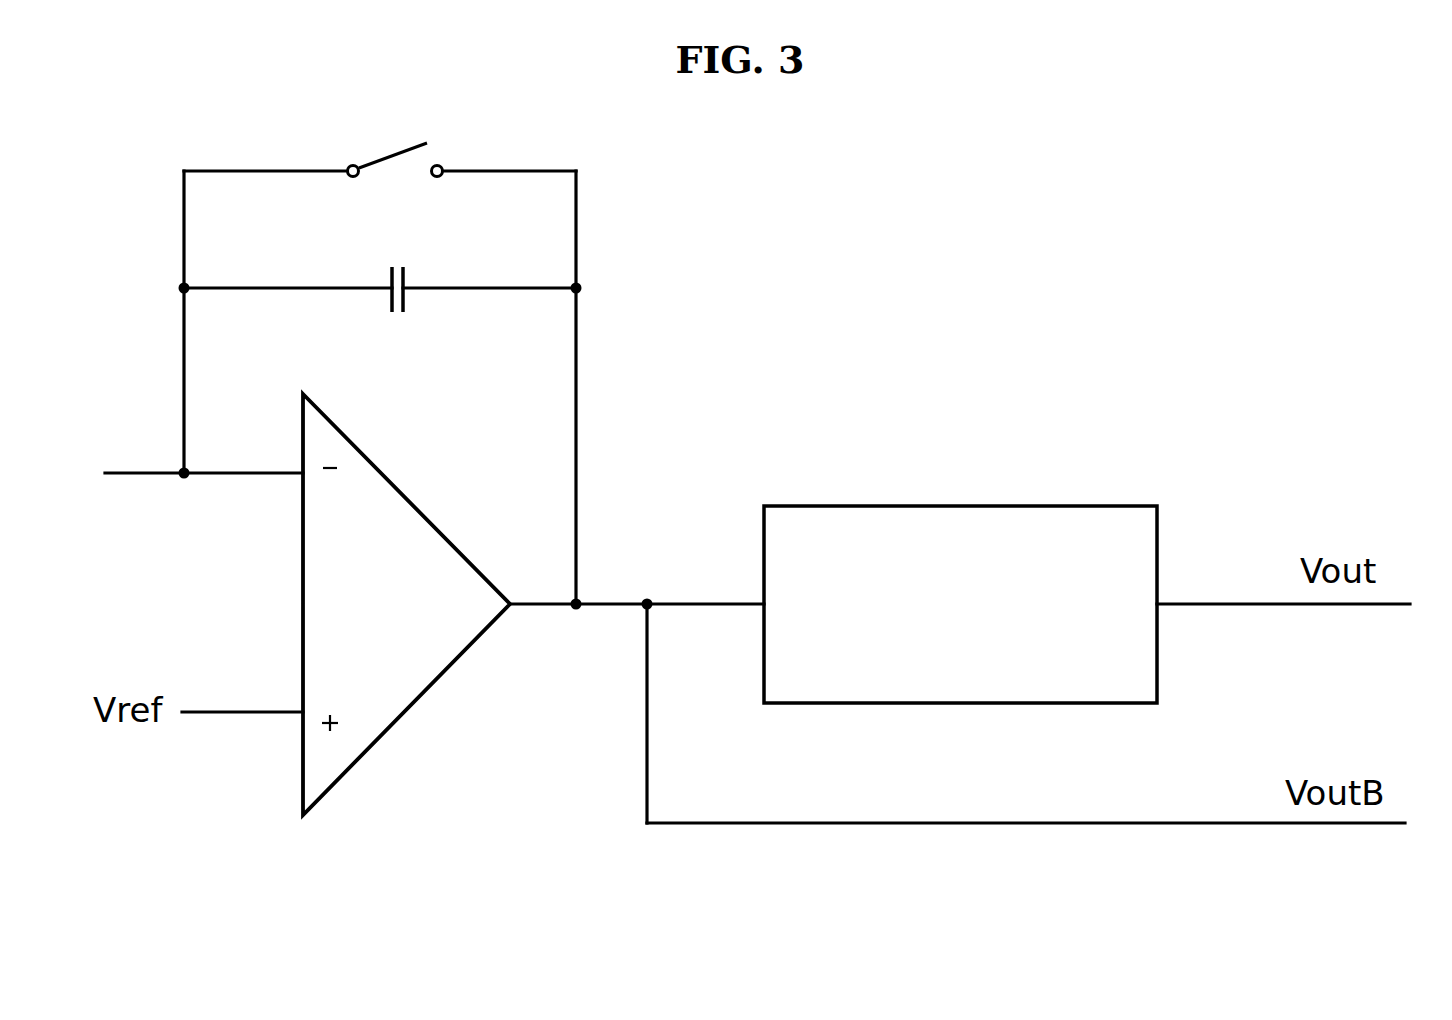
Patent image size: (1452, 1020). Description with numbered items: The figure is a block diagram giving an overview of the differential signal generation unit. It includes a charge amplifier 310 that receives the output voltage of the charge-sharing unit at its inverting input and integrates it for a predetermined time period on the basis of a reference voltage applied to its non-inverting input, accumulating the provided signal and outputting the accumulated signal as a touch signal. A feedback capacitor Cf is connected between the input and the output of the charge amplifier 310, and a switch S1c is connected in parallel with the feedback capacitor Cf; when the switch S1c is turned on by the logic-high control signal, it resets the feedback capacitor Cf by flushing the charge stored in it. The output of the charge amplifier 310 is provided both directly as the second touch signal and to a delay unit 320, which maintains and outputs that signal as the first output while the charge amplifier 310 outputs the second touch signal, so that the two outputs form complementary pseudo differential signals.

The charge amplifier 310 is at (452, 667).
The delay unit 320 is at (960, 604).
The switch S1c is at (395, 182).
The feedback capacitor Cf is at (398, 309).